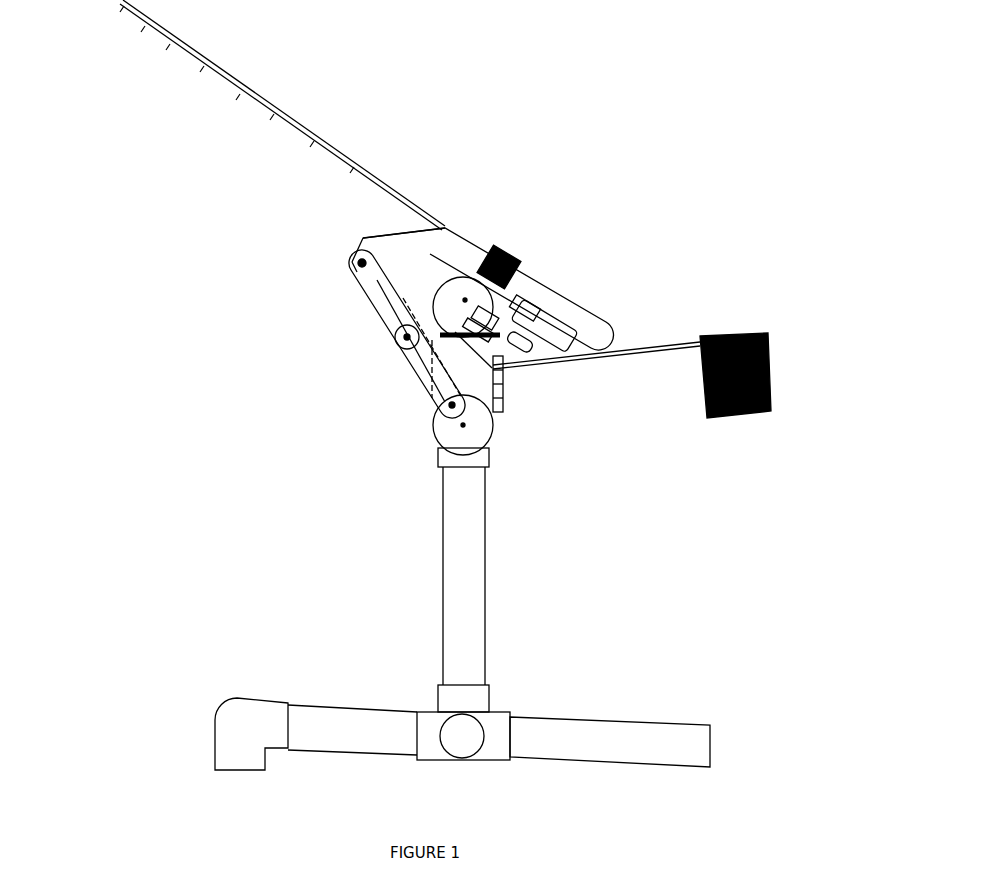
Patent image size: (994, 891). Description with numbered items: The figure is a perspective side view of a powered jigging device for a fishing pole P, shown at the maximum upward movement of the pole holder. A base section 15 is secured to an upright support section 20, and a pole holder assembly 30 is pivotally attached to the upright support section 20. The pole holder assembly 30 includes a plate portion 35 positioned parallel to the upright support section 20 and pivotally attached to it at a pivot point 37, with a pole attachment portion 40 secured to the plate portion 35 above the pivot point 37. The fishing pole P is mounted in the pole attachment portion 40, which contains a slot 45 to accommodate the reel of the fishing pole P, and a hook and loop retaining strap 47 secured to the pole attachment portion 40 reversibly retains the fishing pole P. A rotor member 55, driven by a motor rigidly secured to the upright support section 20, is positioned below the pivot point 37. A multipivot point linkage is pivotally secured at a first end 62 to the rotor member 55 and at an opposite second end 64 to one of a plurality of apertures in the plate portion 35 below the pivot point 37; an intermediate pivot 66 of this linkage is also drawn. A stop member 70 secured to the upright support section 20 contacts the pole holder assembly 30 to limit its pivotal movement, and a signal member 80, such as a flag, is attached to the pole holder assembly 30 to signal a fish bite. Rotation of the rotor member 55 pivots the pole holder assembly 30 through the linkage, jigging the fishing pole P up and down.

The fishing pole P is at (372, 165).
The base section 15 is at (333, 724).
The upright support section 20 is at (471, 563).
The pole holder assembly 30 is at (347, 243).
The plate portion 35 is at (384, 232).
The pivot point 37 is at (465, 300).
The pole attachment portion 40 is at (521, 266).
The slot 45 is at (543, 290).
The hook and loop retaining strap 47 is at (511, 247).
The rotor member 55 is at (482, 437).
The first end 62 is at (440, 406).
The second end 64 is at (352, 263).
The middle pivot 66 is at (397, 338).
The stop member 70 is at (514, 370).
The signal member 80 is at (774, 375).